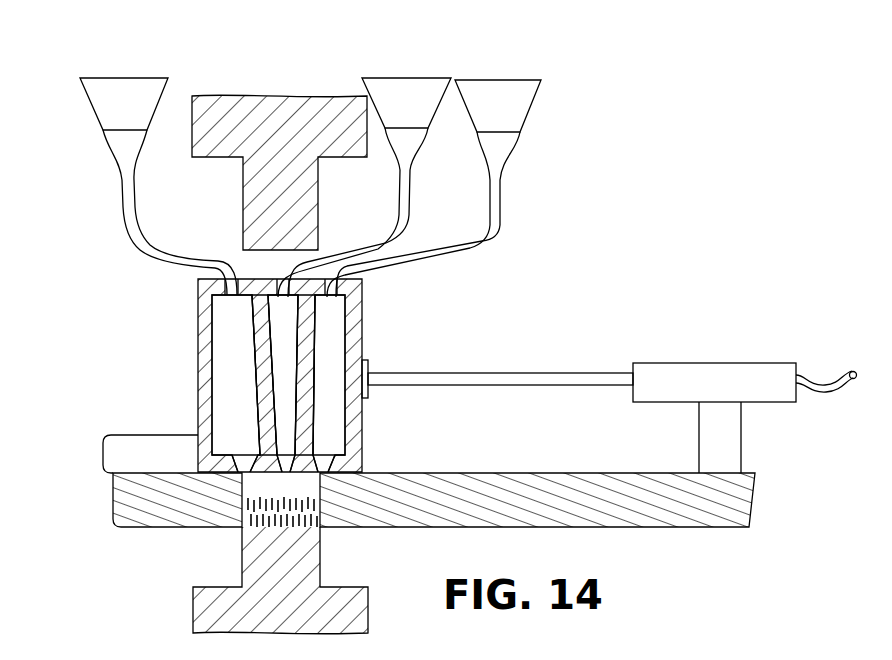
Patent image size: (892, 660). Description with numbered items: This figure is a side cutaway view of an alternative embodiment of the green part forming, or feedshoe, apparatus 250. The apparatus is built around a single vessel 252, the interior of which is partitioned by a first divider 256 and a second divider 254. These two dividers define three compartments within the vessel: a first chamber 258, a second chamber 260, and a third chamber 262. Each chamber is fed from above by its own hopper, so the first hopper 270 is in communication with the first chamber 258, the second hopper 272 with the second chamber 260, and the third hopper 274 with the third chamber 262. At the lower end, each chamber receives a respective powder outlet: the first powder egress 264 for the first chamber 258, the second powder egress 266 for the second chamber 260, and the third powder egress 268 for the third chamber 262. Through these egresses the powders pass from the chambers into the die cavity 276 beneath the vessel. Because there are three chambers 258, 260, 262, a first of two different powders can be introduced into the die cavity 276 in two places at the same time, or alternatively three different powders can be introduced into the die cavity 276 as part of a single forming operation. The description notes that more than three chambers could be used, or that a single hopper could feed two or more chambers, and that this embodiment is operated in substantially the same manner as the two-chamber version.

The green part forming apparatus 250 is at (463, 425).
The vessel 252 is at (362, 293).
The second divider 254 is at (323, 345).
The first divider 256 is at (255, 332).
The first chamber 258 is at (233, 413).
The second chamber 260 is at (285, 388).
The third chamber 262 is at (323, 359).
The first powder egress 264 is at (225, 477).
The second powder egress 266 is at (362, 418).
The third powder egress 268 is at (362, 440).
The first hopper 270 is at (120, 90).
The second hopper 272 is at (382, 88).
The third hopper 274 is at (497, 95).
The die cavity 276 is at (298, 480).